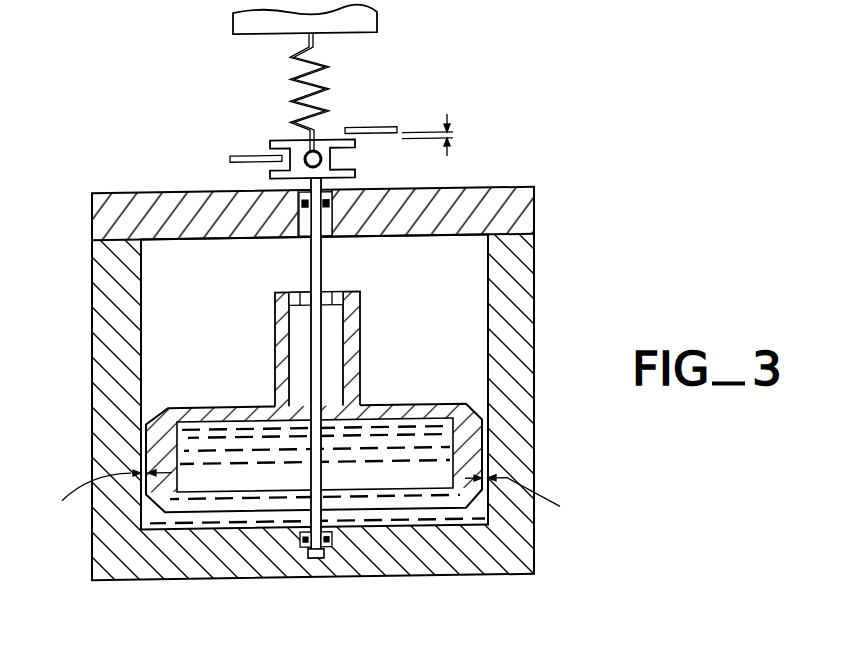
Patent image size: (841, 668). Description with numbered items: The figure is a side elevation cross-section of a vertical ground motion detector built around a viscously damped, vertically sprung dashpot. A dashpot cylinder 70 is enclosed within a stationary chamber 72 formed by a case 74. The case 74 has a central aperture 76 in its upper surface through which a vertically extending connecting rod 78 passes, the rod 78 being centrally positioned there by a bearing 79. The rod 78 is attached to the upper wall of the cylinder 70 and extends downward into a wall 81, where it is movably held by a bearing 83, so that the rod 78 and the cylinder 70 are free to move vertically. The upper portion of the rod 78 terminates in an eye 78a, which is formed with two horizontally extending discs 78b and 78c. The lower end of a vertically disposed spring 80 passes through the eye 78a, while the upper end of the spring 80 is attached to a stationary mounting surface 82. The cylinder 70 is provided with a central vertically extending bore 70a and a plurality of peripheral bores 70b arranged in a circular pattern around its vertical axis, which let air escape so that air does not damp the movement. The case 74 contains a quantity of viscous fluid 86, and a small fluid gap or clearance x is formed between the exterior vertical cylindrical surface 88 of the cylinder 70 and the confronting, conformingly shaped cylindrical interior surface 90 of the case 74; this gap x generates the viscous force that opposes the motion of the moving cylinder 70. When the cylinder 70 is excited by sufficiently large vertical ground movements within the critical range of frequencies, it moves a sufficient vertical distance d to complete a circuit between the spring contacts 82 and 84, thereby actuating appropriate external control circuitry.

The dashpot cylinder 70 is at (392, 353).
The central vertically extending bore 70a is at (284, 340).
The peripheral bores 70b is at (293, 291).
The stationary chamber 72 is at (208, 326).
The case 74 is at (536, 291).
The central aperture 76 is at (300, 190).
The connecting rod 78 is at (322, 267).
The eye 78a is at (331, 157).
The horizontally extending disc 78b is at (320, 141).
The horizontally extending disc 78c is at (285, 172).
The bearing 79 is at (325, 213).
The spring 80 is at (322, 50).
The wall 81 is at (318, 559).
The stationary mounting surface / spring contact 82 is at (378, 16).
The bearing 83 is at (303, 546).
The spring contact 84 is at (382, 128).
The viscous fluid 86 is at (198, 452).
The exterior vertical cylindrical surface 88 is at (490, 470).
The cylindrical interior surface 90 is at (488, 441).
The fluid gap or clearance x is at (310, 498).
The vertical distance d is at (428, 145).